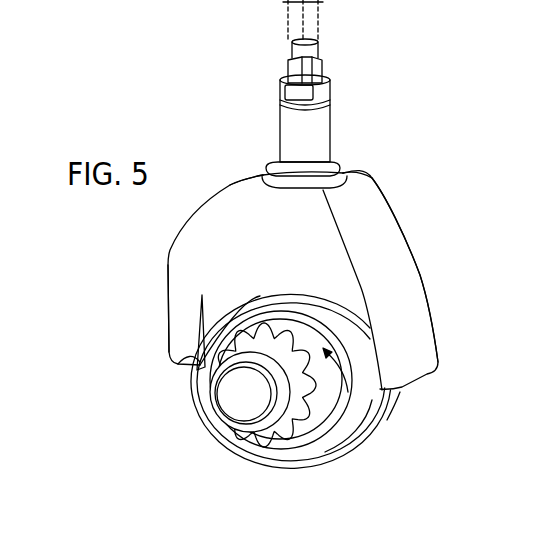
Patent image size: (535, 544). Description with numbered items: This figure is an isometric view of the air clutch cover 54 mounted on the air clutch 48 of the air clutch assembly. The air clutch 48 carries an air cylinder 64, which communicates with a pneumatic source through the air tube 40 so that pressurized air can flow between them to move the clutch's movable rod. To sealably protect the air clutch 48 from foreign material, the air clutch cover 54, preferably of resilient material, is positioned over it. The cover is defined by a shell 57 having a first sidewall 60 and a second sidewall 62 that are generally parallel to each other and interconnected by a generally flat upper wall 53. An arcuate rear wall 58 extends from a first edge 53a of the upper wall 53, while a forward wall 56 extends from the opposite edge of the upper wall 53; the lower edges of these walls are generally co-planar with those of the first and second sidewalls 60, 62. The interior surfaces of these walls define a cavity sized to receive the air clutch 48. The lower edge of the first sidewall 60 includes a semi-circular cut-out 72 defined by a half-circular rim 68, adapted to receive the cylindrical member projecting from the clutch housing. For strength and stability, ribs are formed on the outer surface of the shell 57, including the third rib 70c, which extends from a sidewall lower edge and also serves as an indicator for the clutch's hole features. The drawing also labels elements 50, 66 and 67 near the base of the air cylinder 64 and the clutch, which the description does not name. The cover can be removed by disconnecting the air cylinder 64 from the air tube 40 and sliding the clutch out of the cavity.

The air tube 40 is at (305, 22).
The air clutch 48 is at (385, 422).
The hub 50 is at (293, 413).
The upper wall 53 is at (262, 187).
The first edge 53a is at (355, 176).
The air clutch cover 54 is at (383, 166).
The forward wall 56 is at (158, 302).
The shell 57 is at (258, 177).
The rear wall 58 is at (403, 265).
The first sidewall 60 is at (279, 273).
The second sidewall 62 is at (411, 218).
The air cylinder 64 is at (319, 130).
The flange 66 is at (268, 175).
The ratchet ring 67 is at (318, 330).
The half-circular rim 68 is at (312, 310).
The third rib 70c is at (192, 360).
The semi-circular cut-out 72 is at (346, 388).